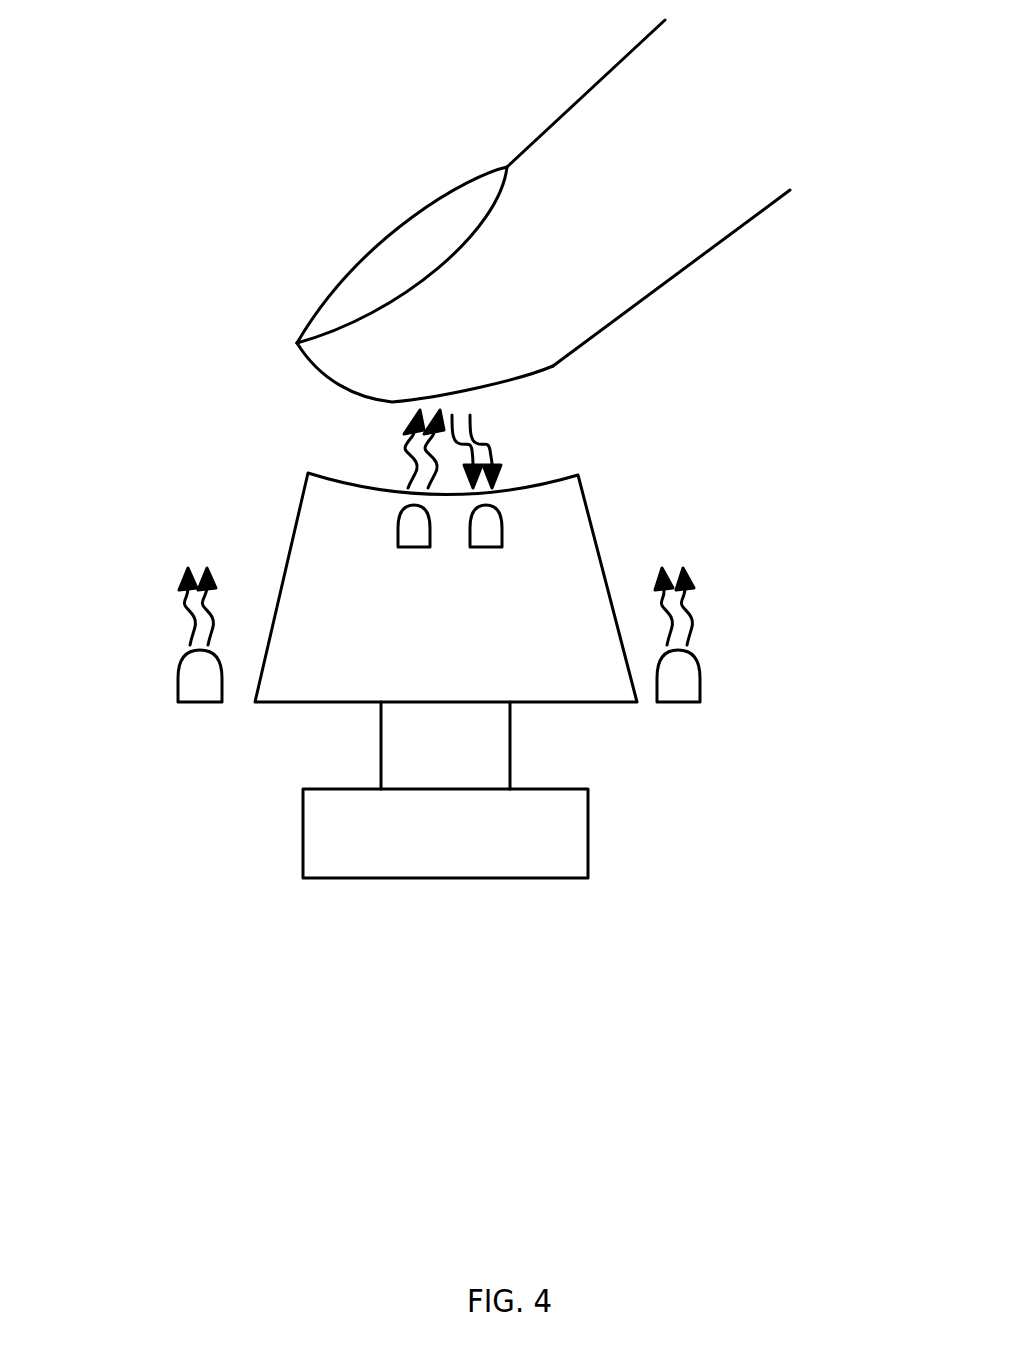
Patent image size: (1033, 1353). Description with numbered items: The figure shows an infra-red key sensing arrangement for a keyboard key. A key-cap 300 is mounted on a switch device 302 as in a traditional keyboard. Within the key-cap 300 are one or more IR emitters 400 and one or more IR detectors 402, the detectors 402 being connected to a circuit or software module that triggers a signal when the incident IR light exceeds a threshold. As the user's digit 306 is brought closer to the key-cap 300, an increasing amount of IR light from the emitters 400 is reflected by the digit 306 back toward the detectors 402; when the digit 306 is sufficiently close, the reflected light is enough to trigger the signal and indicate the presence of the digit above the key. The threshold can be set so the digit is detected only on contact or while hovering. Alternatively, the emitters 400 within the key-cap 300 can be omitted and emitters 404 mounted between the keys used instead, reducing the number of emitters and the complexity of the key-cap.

The digit 306 is at (551, 124).
The key-cap 300 is at (588, 507).
The switch device 302 is at (588, 833).
The IR emitters 400 is at (417, 547).
The IR detectors 402 is at (490, 547).
The emitters 404 is at (182, 678).